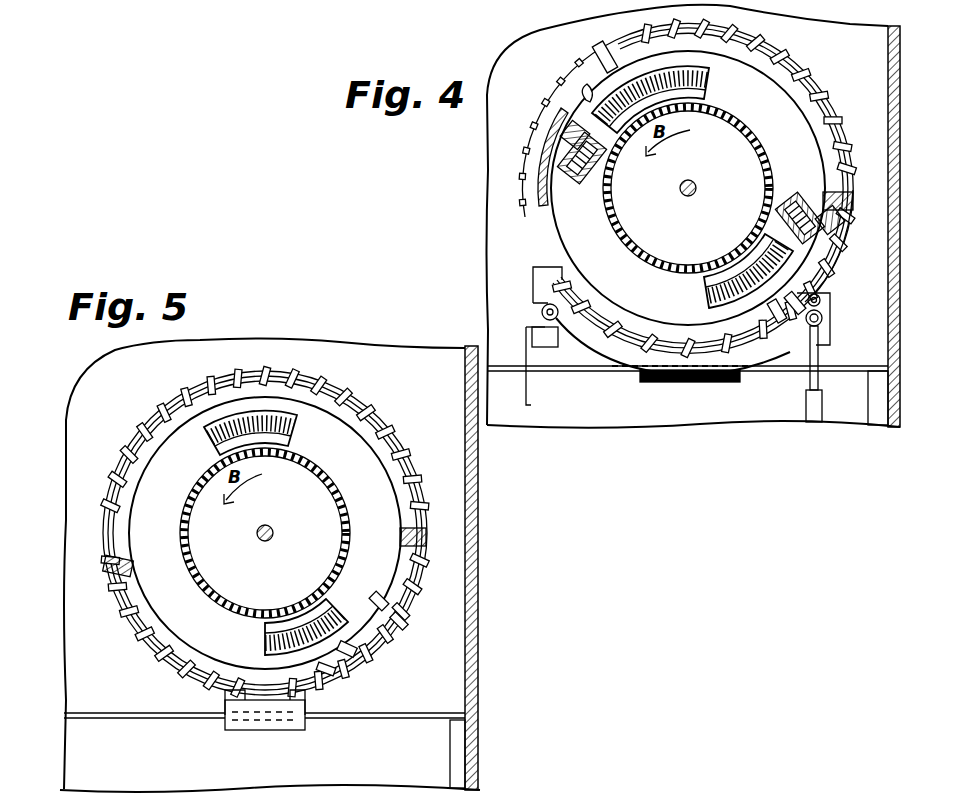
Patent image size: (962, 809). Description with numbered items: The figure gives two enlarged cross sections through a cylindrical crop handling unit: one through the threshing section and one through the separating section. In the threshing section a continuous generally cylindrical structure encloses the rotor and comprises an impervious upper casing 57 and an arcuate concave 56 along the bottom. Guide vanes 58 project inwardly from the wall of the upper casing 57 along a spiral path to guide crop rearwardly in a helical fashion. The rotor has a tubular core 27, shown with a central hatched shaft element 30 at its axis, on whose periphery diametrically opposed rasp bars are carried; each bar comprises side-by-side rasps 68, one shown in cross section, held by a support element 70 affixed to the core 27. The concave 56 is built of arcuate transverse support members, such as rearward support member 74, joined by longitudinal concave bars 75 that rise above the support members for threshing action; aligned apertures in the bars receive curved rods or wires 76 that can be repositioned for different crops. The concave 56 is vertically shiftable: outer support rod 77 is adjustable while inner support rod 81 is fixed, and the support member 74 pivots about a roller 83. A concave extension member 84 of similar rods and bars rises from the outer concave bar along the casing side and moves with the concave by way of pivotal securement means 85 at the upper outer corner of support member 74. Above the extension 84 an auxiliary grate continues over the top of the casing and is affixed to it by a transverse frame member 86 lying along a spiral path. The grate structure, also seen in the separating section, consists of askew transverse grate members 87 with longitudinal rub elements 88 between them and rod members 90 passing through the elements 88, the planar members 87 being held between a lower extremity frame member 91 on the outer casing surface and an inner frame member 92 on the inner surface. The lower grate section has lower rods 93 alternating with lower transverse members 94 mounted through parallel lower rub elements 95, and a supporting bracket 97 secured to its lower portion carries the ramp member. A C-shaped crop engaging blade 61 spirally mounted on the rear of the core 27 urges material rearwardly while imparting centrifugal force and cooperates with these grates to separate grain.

In FIG. 4, the tubular core 27 is at (636, 229).
In FIG. 5, the tubular core 27 is at (212, 568).
In FIG. 4, the shaft 30 is at (694, 197).
In FIG. 5, the shaft 30 is at (272, 540).
In FIG. 4, the concave 56 is at (760, 395).
In FIG. 4, the upper casing 57 is at (530, 186).
In FIG. 4, the guide vanes 58 is at (584, 100).
In FIG. 4, the crop engaging blade 61 is at (712, 80).
In FIG. 5, the crop engaging blade 61 is at (294, 428).
In FIG. 4, the rasps 68 is at (566, 135).
In FIG. 4, the support element 70 is at (594, 192).
In FIG. 4, the rearward support member 74 is at (564, 345).
In FIG. 4, the concave bars 75 is at (608, 360).
In FIG. 4, the curved rods or wires 76 is at (781, 320).
In FIG. 4, the outer support rod 77 is at (820, 384).
In FIG. 4, the inner support rod 81 is at (528, 398).
In FIG. 4, the roller 83 is at (542, 312).
In FIG. 4, the concave extension member 84 is at (836, 268).
In FIG. 4, the pivotal securement means 85 is at (822, 305).
In FIG. 4, the transverse frame member 86 is at (592, 66).
In FIG. 4, the transverse grate members 87 is at (812, 128).
In FIG. 5, the transverse grate members 87 is at (392, 490).
In FIG. 4, the longitudinal rub elements 88 is at (806, 74).
In FIG. 5, the longitudinal rub elements 88 is at (406, 445).
In FIG. 4, the rod members 90 is at (832, 106).
In FIG. 5, the rod members 90 is at (380, 410).
In FIG. 4, the lower extremity frame member 91 is at (852, 200).
In FIG. 5, the lower extremity frame member 91 is at (428, 540).
In FIG. 4, the inner frame member 92 is at (536, 222).
In FIG. 5, the inner frame member 92 is at (104, 568).
In FIG. 5, the lower rods 93 is at (402, 622).
In FIG. 5, the lower transverse members 94 is at (410, 564).
In FIG. 5, the lower rub elements 95 is at (410, 596).
In FIG. 4, the supporting bracket 97 is at (703, 384).
In FIG. 5, the supporting bracket 97 is at (312, 730).